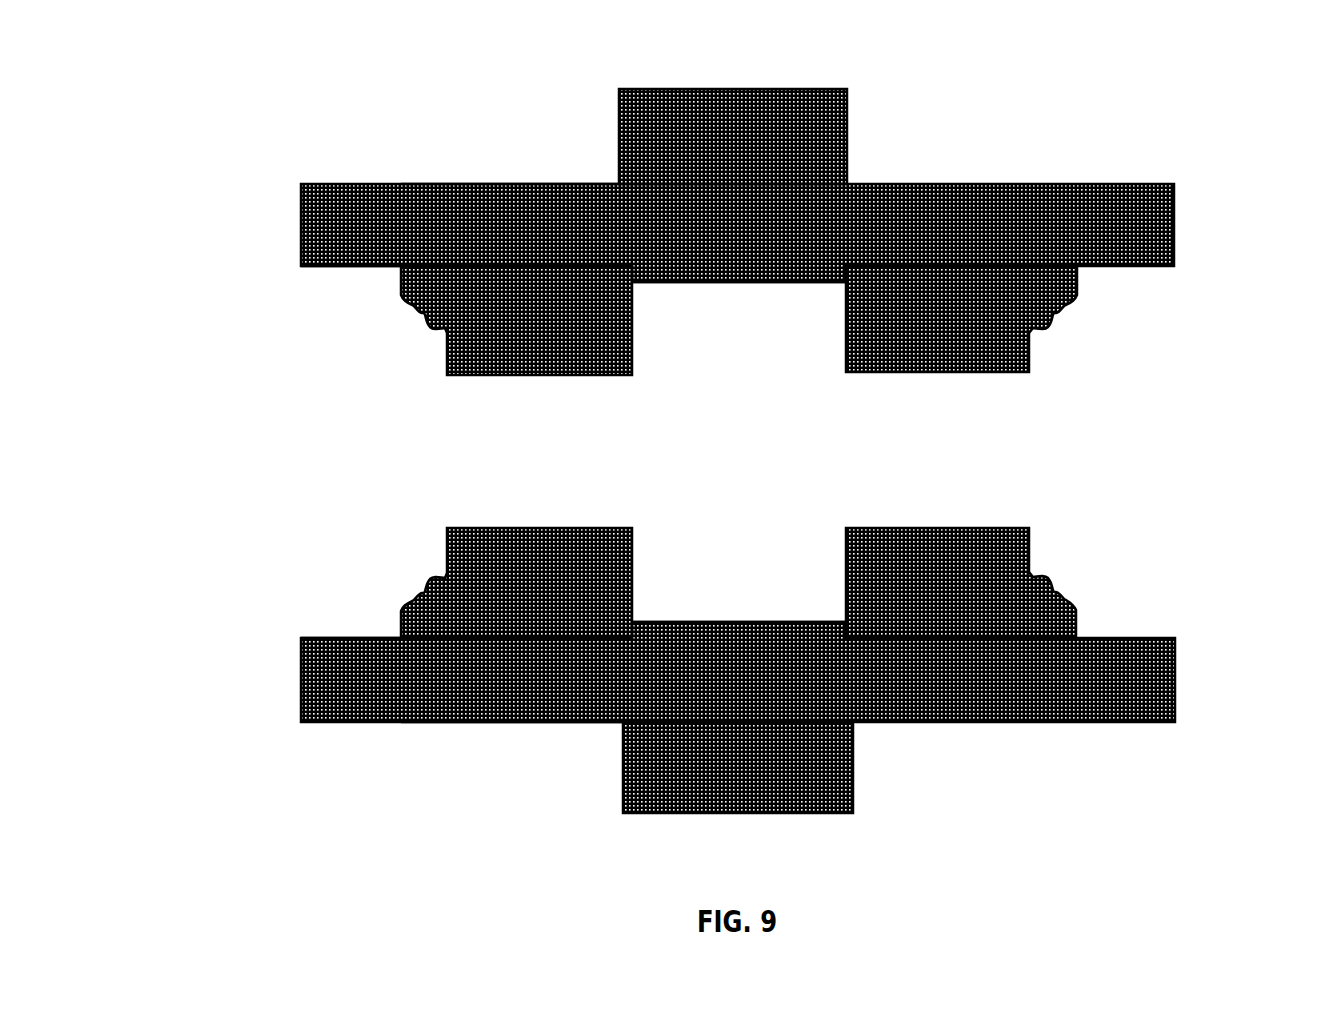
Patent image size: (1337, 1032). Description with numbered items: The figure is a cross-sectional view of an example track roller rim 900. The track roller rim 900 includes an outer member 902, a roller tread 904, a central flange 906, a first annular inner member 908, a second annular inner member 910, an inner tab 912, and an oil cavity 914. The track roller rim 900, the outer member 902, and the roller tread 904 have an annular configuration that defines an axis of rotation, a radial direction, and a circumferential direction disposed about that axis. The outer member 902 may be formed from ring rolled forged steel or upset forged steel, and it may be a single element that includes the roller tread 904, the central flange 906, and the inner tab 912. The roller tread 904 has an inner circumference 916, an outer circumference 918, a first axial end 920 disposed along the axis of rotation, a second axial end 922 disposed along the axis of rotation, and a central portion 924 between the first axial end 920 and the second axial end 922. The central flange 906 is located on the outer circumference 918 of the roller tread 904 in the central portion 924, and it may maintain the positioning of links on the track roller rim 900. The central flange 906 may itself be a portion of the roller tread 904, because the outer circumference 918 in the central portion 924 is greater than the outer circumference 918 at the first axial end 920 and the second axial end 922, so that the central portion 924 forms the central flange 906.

The track roller rim 900 is at (252, 56).
The outer member 902 is at (516, 95).
The roller tread 904 is at (1176, 226).
The central flange 906 is at (848, 118).
The first annular inner member 908 is at (633, 370).
The second annular inner member 910 is at (1030, 366).
The inner tab 912 is at (771, 284).
The oil cavity 914 is at (713, 466).
The inner circumference 916 is at (360, 268).
The outer circumference 918 is at (578, 183).
The first axial end 920 is at (200, 316).
The second axial end 922 is at (1276, 406).
The central portion 924 is at (696, 50).